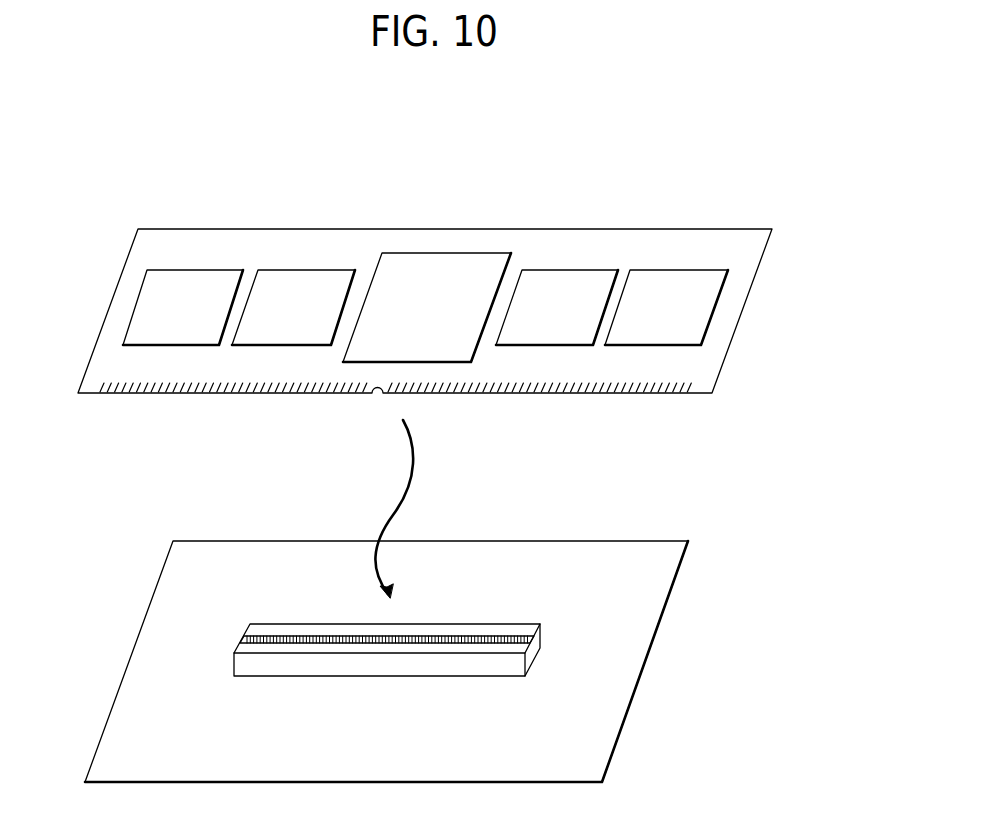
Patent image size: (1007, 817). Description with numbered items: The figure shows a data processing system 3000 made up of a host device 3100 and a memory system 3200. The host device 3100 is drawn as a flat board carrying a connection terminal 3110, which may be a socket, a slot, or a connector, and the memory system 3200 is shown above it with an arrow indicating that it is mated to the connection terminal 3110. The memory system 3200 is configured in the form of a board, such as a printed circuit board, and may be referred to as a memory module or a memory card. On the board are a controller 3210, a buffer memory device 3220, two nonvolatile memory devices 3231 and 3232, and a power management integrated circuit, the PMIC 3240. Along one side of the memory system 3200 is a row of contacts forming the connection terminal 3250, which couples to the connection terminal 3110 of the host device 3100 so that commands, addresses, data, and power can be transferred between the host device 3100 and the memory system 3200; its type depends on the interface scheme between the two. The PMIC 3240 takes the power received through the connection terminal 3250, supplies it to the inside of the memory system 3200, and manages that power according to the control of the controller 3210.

The data processing system 3000 is at (98, 148).
The memory system 3200 is at (748, 229).
The controller 3210 is at (479, 253).
The buffer memory device 3220 is at (313, 270).
The nonvolatile memory device 3231 is at (575, 270).
The nonvolatile memory device 3232 is at (683, 270).
The power management integrated circuit (PMIC) 3240 is at (139, 295).
The connection terminal 3250 is at (111, 388).
The host device 3100 is at (665, 541).
The connection terminal 3110 is at (542, 633).